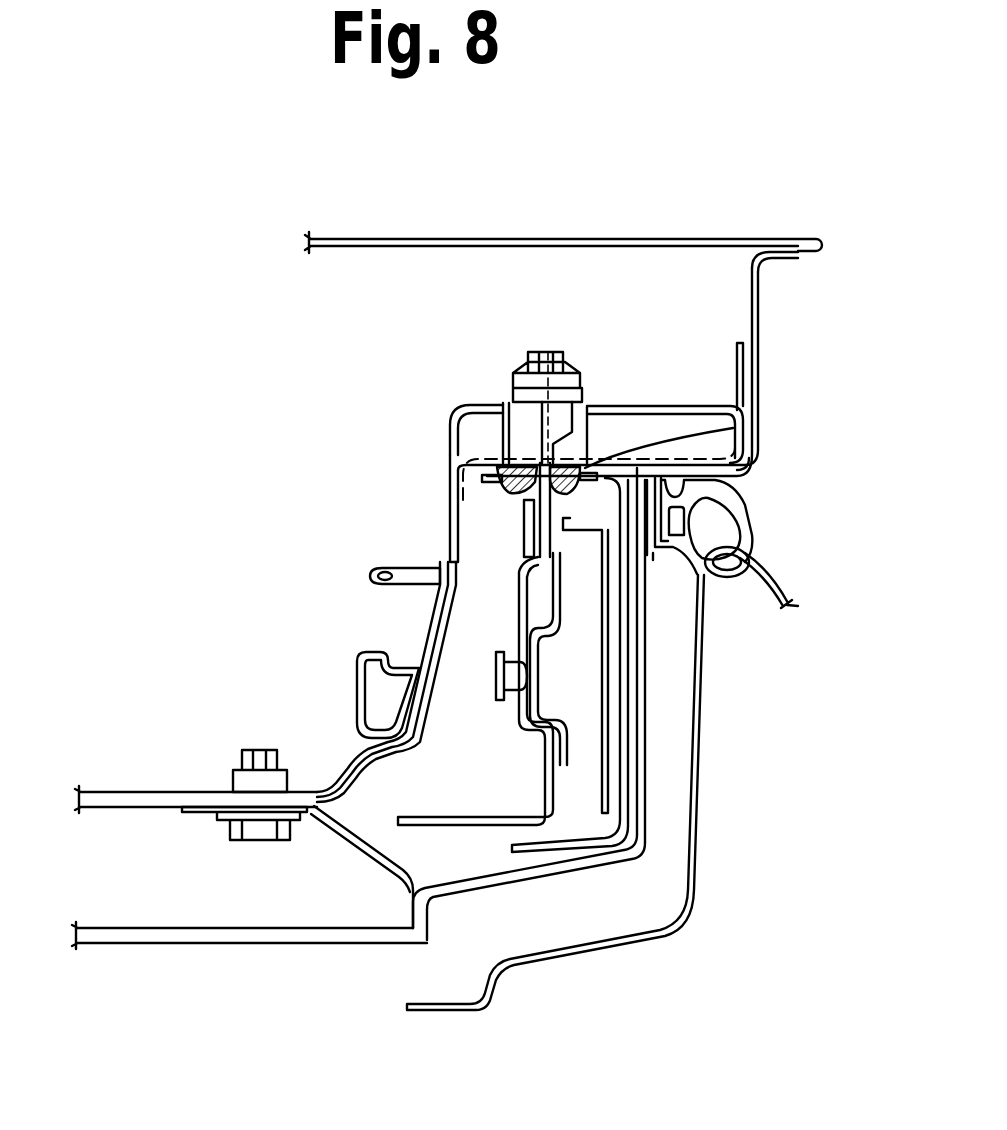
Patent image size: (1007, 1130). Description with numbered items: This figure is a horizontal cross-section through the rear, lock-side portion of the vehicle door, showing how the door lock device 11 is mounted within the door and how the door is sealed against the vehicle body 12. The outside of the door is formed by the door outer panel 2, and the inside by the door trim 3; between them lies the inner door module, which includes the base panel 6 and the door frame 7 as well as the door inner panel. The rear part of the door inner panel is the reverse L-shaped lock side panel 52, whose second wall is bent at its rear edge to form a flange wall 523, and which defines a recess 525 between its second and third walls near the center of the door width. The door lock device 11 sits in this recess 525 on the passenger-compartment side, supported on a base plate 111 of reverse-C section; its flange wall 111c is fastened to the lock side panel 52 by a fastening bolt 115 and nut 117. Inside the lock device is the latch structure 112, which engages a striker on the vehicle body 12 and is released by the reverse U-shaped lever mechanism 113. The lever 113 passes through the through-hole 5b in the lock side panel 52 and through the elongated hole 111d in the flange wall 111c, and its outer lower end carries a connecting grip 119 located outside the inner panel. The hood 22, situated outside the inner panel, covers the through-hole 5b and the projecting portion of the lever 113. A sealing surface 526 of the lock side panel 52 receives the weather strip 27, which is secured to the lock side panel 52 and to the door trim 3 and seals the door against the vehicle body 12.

The door outer panel 2 is at (563, 191).
The door trim 3 is at (249, 975).
The through-hole 5b is at (646, 425).
The base panel 6 is at (196, 738).
The door frame 7 is at (351, 563).
The door lock device 11 is at (482, 644).
The vehicle body 12 is at (601, 792).
The hood 22 is at (431, 407).
The weather strip 27 is at (762, 543).
The lock side panel 52 is at (664, 372).
The base plate 111 is at (656, 665).
The flange wall 111c is at (792, 400).
The elongated hole 111d is at (530, 455).
The latch structure 112 is at (681, 665).
The lever mechanism 113 is at (492, 387).
The fastening bolt 115 is at (244, 864).
The nut 117 is at (236, 728).
The connecting grip 119 is at (572, 335).
The flange wall 523 is at (777, 201).
The recess 525 is at (379, 508).
The sealing surface 526 is at (801, 472).